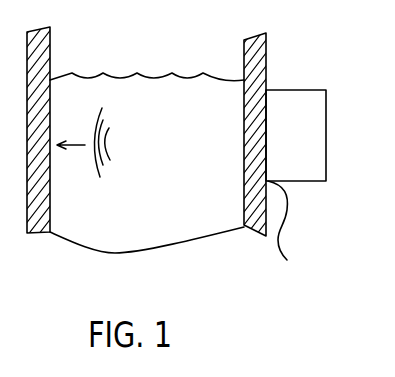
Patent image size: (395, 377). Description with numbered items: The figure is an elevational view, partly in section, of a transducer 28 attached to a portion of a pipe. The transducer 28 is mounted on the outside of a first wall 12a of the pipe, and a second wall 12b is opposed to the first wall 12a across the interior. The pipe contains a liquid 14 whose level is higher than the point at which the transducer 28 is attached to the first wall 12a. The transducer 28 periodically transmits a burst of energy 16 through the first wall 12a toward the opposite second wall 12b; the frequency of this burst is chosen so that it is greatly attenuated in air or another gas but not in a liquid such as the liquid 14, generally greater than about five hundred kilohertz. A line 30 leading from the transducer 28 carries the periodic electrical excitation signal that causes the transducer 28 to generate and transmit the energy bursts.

The first wall 12a is at (262, 57).
The second wall 12b is at (40, 52).
The liquid 14 is at (167, 205).
The burst of energy 16 is at (110, 141).
The transducer 28 is at (316, 172).
The line 30 is at (280, 248).